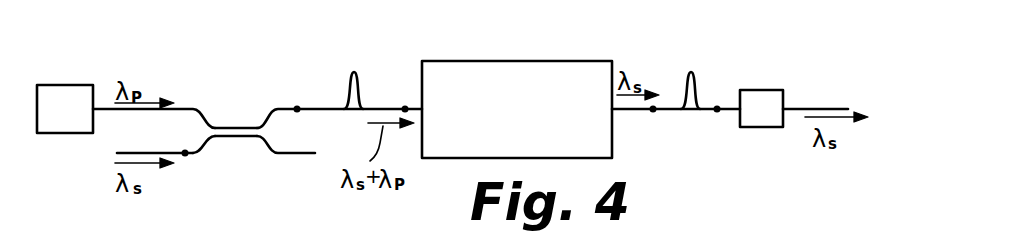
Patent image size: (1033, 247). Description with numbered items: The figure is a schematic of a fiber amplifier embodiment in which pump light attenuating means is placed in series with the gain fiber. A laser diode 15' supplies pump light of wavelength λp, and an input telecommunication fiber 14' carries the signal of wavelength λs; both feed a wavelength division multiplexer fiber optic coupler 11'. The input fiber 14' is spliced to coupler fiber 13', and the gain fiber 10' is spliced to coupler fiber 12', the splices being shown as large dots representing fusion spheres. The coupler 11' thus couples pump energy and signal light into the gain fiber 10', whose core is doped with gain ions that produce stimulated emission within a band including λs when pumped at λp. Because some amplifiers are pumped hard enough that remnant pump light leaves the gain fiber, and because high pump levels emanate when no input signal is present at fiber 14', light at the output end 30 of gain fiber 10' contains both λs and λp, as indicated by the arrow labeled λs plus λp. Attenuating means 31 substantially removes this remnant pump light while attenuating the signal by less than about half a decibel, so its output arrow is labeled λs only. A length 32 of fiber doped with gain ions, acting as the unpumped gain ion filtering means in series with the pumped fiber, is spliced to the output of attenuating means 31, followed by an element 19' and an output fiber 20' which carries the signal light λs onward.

The laser diode 15' is at (68, 85).
The input telecommunication fiber 14' is at (122, 158).
The coupler fiber 12' is at (161, 91).
The wavelength division multiplexer fiber optic coupler 11' is at (241, 103).
The coupler fiber 13' is at (254, 160).
The gain fiber 10' is at (331, 66).
The output end of gain fiber 30 is at (385, 106).
The pump light attenuating means 31 is at (517, 109).
The length of fiber doped with gain ions 32 is at (765, 50).
The optical filter 19' is at (787, 87).
The signal light output fiber 20' is at (832, 88).